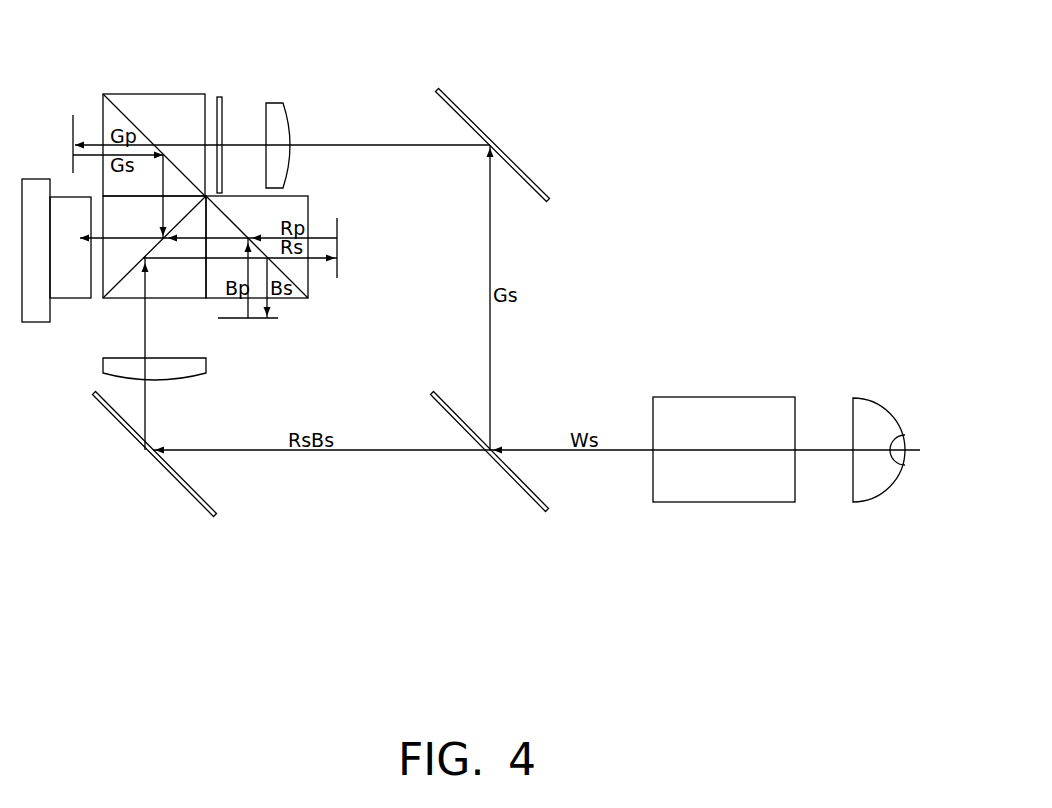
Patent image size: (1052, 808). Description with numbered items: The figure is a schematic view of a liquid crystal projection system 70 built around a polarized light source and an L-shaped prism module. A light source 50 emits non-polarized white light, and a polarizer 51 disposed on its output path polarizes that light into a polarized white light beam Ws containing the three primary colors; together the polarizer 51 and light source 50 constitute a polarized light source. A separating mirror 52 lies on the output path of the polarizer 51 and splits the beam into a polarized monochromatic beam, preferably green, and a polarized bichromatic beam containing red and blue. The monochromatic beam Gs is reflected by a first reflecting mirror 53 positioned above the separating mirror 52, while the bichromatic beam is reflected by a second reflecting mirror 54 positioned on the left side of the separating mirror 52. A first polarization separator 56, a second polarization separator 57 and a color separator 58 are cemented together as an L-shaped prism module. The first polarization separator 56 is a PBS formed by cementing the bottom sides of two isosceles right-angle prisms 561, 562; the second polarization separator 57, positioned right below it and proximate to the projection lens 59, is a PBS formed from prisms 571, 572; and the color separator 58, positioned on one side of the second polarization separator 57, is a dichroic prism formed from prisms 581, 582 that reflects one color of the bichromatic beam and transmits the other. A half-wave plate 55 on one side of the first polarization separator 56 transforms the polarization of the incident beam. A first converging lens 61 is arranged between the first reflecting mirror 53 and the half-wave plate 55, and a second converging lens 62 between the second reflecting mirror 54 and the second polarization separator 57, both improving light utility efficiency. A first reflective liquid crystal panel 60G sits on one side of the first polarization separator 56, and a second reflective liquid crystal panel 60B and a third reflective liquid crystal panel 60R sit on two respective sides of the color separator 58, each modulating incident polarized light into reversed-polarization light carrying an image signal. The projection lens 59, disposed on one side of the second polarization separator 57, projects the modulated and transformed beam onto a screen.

The liquid crystal projection system 70 is at (618, 52).
The light source 50 is at (875, 498).
The polarizer 51 is at (692, 502).
The separating mirror 52 is at (525, 492).
The first reflecting mirror 53 is at (520, 167).
The second reflecting mirror 54 is at (187, 495).
The half-wave plate 55 is at (222, 97).
The first polarization separator 56 is at (172, 93).
The isosceles right-angle prism 561 is at (177, 137).
The isosceles right-angle prism 562 is at (141, 197).
The second polarization separator 57 is at (122, 298).
The isosceles right-angle prism 571 is at (183, 295).
The isosceles right-angle prism 572 is at (135, 235).
The color separator 58 is at (297, 193).
The isosceles right-angle prism 581 is at (263, 225).
The isosceles right-angle prism 582 is at (230, 282).
The projection lens 59 is at (33, 322).
The first reflective liquid crystal panel 60G is at (45, 144).
The third reflective liquid crystal panel 60R is at (366, 248).
The second reflective liquid crystal panel 60B is at (248, 333).
The first converging lens 61 is at (288, 127).
The second converging lens 62 is at (178, 380).